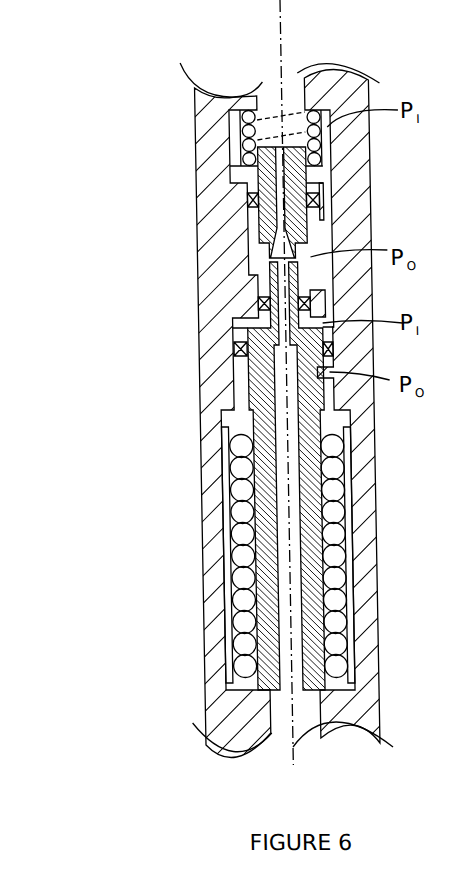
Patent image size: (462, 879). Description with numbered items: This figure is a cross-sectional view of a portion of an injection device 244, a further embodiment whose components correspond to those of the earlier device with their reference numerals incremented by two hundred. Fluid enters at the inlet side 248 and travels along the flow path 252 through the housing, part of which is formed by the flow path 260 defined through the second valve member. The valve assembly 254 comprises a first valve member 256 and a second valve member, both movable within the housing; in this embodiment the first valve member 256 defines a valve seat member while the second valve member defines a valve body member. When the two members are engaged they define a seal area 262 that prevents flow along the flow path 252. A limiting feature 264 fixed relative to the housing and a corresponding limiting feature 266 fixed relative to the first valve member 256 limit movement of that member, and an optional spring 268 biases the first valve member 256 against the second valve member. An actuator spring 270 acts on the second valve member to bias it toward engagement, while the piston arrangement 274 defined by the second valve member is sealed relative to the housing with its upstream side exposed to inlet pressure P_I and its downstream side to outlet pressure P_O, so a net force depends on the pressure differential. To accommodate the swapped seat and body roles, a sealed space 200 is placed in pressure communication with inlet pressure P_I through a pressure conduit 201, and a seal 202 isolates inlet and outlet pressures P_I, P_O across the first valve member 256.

The injection device 244 is at (96, 78).
The inlet side 248 is at (261, 83).
The flow path 252 is at (299, 83).
The spring 268 is at (243, 120).
The corresponding limiting feature 266 is at (242, 170).
The limiting feature 264 is at (243, 200).
The valve assembly 254 is at (177, 262).
The seal area 262 is at (266, 248).
The sealed space 200 is at (241, 327).
The piston arrangement 274 is at (221, 348).
The flow path 260 is at (277, 556).
The actuator spring 270 is at (229, 602).
The first valve member 256 is at (300, 180).
The seal 202 is at (302, 200).
The pressure conduit 201 is at (322, 272).